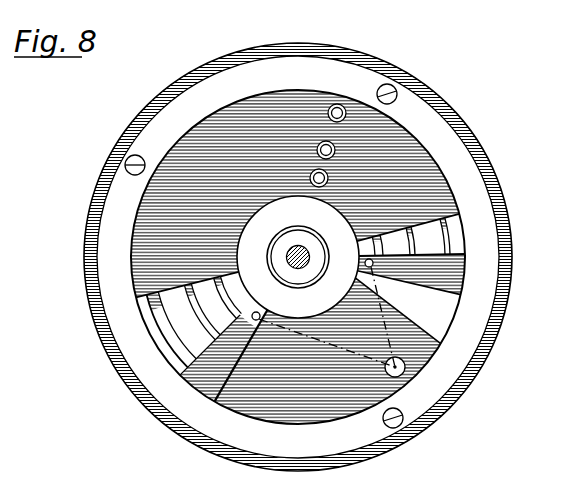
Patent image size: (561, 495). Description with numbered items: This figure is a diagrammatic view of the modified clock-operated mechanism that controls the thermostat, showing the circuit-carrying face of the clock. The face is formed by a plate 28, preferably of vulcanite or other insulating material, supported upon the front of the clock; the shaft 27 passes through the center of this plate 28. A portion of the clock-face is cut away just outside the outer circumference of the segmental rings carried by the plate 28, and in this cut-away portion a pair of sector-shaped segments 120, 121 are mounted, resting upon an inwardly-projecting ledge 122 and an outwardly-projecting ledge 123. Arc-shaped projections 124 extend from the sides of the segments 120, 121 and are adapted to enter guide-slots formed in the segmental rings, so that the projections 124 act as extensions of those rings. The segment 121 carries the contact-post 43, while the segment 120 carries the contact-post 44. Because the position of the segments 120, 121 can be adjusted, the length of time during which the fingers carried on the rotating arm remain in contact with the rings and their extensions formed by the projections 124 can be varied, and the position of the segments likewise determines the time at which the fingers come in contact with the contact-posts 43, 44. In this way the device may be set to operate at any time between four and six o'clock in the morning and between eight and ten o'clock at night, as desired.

The inwardly-projecting ledge 122 is at (298, 257).
The plate 28 is at (298, 257).
The outwardly-projecting ledge 123 is at (298, 257).
The shaft 27 is at (301, 255).
The arc-shaped projections 124 is at (226, 303).
The sector-shaped segment 120 is at (410, 279).
The sector-shaped segment 121 is at (223, 378).
The contact-post 43 is at (259, 320).
The contact-post 44 is at (373, 268).